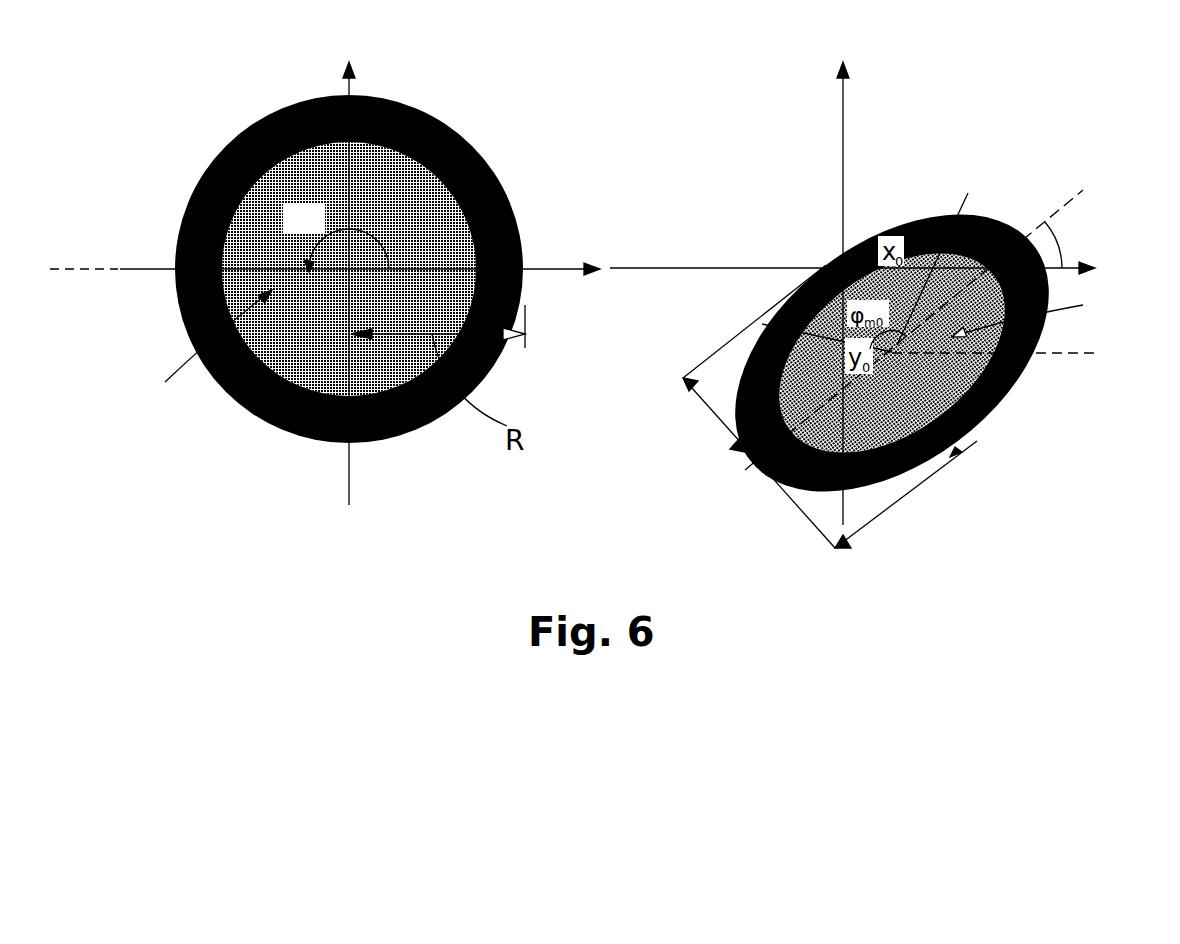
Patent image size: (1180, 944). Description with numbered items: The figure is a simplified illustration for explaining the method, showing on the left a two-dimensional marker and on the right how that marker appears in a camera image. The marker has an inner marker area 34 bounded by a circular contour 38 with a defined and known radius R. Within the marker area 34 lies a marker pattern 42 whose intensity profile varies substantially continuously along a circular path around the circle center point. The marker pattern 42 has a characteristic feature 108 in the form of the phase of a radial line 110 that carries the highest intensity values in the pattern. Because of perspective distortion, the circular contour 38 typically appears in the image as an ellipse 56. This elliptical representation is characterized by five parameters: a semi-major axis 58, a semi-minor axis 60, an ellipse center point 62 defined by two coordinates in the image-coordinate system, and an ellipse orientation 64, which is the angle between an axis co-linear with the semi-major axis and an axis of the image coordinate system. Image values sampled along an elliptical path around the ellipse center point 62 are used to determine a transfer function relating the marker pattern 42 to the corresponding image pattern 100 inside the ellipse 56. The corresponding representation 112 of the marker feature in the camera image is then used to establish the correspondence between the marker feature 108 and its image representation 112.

The inner marker area 34 is at (398, 205).
The circular contour 38 is at (405, 128).
The marker pattern 42 is at (207, 356).
The characteristic feature 108 is at (388, 250).
The radial line 110 is at (75, 276).
The ellipse 56 is at (1006, 394).
The semi-major axis 58 is at (899, 500).
The semi-minor axis 60 is at (720, 424).
The ellipse center point 62 is at (978, 405).
The ellipse orientation 64 is at (1063, 240).
The image pattern 100 is at (1039, 312).
The image representation of marker feature 112 is at (944, 254).